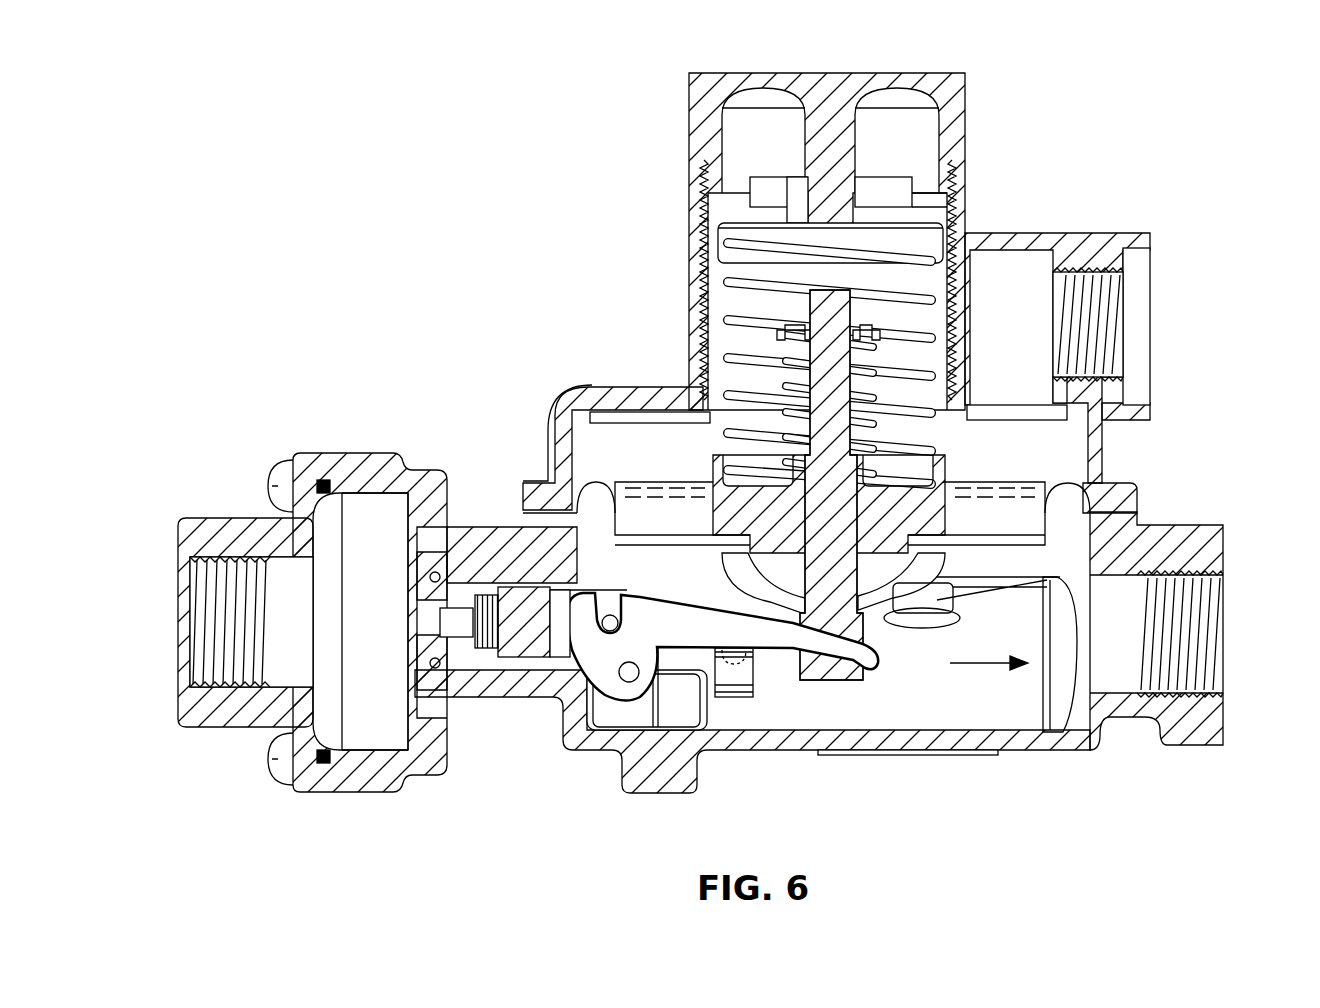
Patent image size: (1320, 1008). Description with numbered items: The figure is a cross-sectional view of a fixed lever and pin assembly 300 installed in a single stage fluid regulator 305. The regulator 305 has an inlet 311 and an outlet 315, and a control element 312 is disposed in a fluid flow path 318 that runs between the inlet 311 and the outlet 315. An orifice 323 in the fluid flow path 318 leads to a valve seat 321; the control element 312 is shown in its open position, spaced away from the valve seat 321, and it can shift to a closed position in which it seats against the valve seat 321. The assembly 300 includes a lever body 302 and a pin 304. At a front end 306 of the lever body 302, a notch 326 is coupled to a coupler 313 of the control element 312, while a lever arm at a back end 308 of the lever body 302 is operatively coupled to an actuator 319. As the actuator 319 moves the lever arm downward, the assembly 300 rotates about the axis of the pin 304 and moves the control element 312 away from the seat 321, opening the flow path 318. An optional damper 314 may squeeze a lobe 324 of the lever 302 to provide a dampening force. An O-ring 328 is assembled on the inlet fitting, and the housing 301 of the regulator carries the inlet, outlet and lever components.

The fixed lever and pin assembly 300 is at (549, 708).
The valve housing 301 is at (912, 750).
The lever body 302 is at (692, 640).
The pin 304 is at (628, 683).
The single stage regulator 305 is at (1084, 70).
The front end 306 is at (583, 620).
The back end 308 is at (867, 635).
The inlet 311 is at (185, 598).
The control element 312 is at (515, 645).
The coupler 313 is at (609, 614).
The damper 314 is at (736, 697).
The outlet 315 is at (1225, 615).
The fluid flow path 318 is at (1000, 668).
The actuator 319 is at (1216, 202).
The valve seat 321 is at (478, 580).
The orifice 323 is at (428, 625).
The lobe 324 is at (763, 640).
The notch 326 is at (618, 590).
The O-ring 328 is at (325, 764).